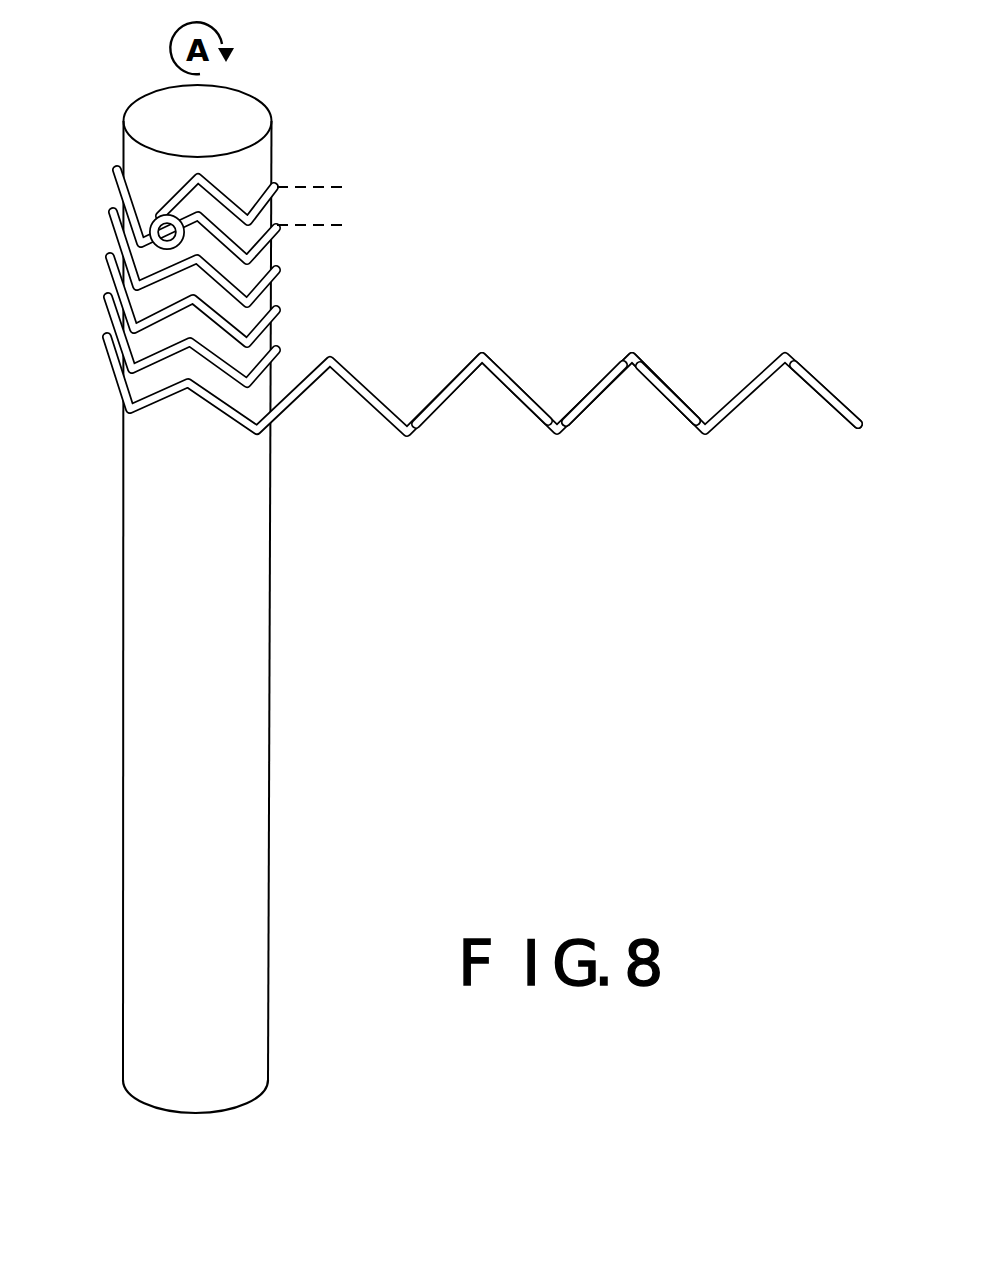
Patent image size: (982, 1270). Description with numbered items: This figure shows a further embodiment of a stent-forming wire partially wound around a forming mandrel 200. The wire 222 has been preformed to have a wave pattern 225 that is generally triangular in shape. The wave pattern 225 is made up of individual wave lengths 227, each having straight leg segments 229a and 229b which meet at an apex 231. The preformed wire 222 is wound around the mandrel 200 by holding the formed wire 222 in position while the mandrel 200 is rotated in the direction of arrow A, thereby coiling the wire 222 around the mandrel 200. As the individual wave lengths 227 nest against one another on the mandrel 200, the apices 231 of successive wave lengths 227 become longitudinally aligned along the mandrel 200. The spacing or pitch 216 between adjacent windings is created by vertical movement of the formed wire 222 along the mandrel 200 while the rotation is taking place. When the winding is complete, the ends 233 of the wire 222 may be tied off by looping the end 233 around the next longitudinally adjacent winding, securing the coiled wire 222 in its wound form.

The mandrel 200 is at (233, 798).
The pitch 216 is at (348, 170).
The wire 222 is at (297, 386).
The wave pattern 225 is at (837, 392).
The wave length 227 is at (707, 440).
The straight leg segment 229a is at (592, 386).
The straight leg segment 229b is at (662, 378).
The apex 231 is at (477, 352).
The end of the wire 233 is at (148, 237).